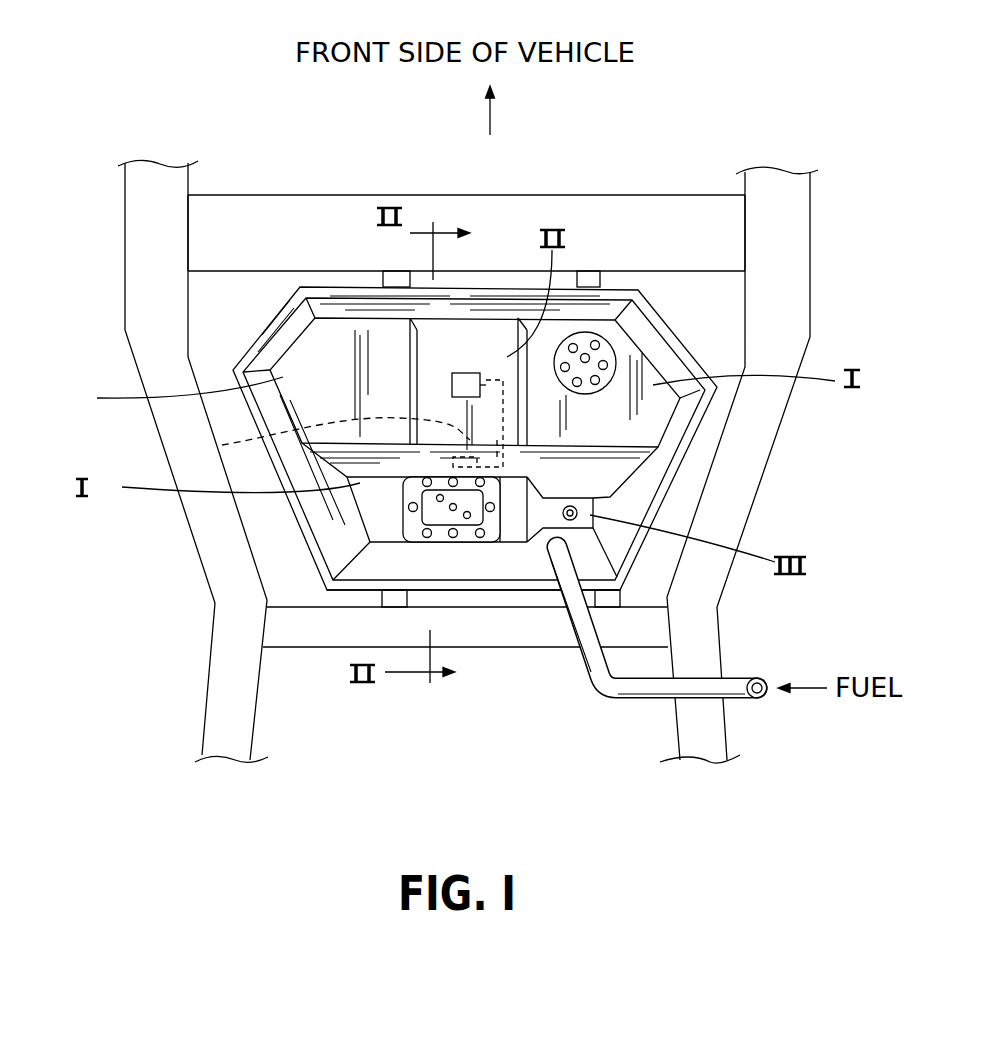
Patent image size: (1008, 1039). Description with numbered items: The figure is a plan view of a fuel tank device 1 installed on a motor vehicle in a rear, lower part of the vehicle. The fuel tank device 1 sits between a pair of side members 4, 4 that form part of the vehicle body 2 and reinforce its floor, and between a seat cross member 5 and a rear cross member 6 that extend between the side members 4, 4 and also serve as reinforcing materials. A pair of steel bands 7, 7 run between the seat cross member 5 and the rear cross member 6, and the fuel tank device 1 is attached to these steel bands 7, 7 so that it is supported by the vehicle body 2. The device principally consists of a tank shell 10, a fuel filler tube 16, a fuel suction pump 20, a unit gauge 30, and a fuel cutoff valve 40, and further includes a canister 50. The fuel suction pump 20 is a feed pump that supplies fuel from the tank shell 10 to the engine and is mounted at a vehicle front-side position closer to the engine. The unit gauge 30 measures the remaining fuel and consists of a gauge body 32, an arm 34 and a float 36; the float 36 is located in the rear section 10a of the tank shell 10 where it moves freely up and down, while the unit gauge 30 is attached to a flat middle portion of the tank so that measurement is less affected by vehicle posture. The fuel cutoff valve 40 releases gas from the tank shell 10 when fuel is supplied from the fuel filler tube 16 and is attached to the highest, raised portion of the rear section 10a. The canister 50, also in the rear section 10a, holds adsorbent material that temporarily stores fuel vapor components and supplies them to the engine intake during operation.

The fuel tank device 1 is at (475, 445).
The vehicle body 2 is at (262, 192).
The side member 4 is at (140, 190).
The seat cross member 5 is at (688, 193).
The rear cross member 6 is at (540, 650).
The steel band 7 is at (395, 270).
The tank shell 10 is at (475, 445).
The rear section 10a is at (490, 560).
The fuel filler tube 16 is at (732, 675).
The fuel suction pump 20 is at (605, 387).
The unit gauge 30 is at (455, 372).
The gauge body 32 is at (468, 372).
The arm 34 is at (497, 457).
The float 36 is at (222, 445).
The fuel cutoff valve 40 is at (575, 500).
The canister 50 is at (392, 517).